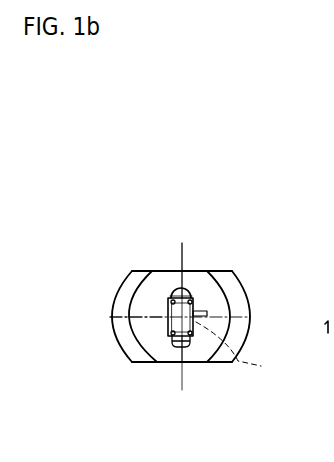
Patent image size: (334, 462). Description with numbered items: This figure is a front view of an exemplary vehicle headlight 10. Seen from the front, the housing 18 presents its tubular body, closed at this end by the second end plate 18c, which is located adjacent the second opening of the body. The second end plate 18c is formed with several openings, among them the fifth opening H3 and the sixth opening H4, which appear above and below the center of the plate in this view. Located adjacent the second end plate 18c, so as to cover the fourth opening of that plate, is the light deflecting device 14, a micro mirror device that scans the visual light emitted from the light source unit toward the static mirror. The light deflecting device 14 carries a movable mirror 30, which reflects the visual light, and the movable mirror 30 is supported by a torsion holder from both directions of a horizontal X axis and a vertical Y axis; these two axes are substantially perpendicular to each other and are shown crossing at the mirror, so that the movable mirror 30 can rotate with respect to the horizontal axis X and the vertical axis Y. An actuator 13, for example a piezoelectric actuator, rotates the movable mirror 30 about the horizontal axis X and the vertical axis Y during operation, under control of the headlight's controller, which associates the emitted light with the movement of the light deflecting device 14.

The vehicle headlight 10 is at (246, 257).
The actuator 13 is at (207, 313).
The light deflecting device 14 is at (161, 294).
The housing 18 is at (251, 288).
The second end plate 18c is at (205, 347).
The movable mirror 30 is at (246, 351).
The fifth opening H3 is at (184, 276).
The sixth opening H4 is at (178, 346).
The horizontal X axis X is at (108, 317).
The vertical Y axis Y is at (174, 262).